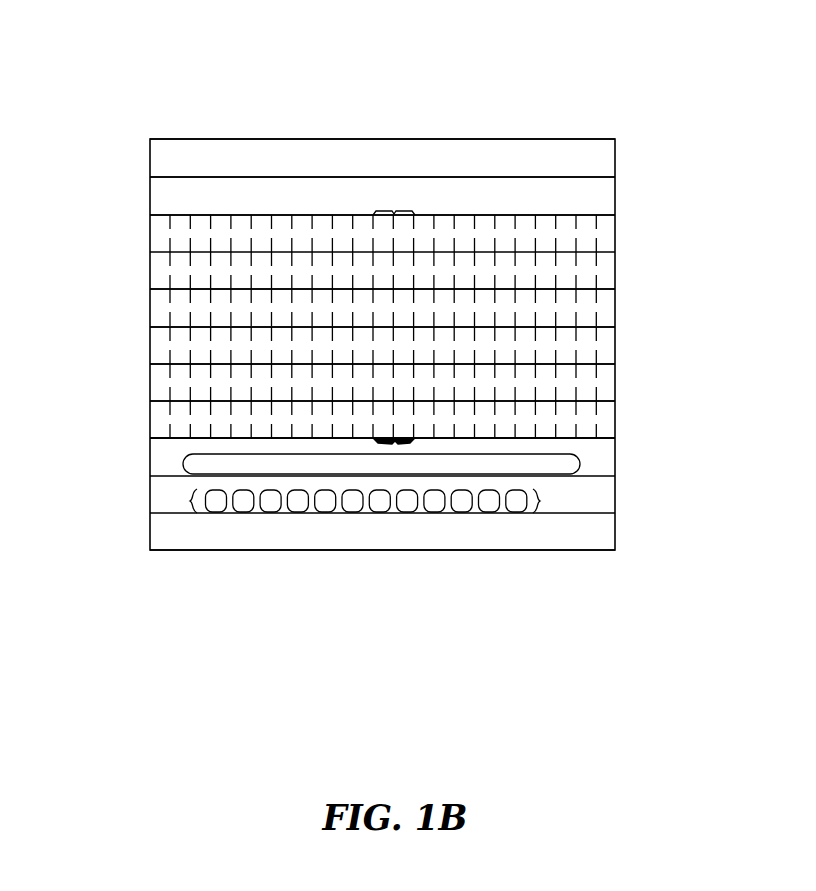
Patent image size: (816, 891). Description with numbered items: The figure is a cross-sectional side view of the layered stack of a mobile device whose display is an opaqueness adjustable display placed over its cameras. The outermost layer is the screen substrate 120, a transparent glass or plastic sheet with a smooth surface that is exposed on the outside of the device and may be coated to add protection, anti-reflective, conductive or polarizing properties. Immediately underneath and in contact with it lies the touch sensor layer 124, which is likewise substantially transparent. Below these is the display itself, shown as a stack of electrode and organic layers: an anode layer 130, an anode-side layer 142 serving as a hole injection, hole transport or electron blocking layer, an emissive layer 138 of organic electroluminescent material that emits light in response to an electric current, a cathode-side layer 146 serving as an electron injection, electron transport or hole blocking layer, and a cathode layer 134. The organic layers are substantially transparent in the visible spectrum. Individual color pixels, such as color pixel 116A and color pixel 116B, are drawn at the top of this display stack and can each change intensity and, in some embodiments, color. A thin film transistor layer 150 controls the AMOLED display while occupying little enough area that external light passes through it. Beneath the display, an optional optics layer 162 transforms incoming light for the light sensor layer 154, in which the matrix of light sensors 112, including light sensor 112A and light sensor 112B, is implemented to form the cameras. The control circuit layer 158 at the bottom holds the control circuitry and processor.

The screen substrate 120 is at (580, 155).
The touch sensor layer 124 is at (613, 193).
The color pixel 116A is at (383, 207).
The color pixel 116B is at (403, 207).
The anode layer 130 is at (158, 238).
The anode-side layer 142 is at (167, 268).
The emissive layer 138 is at (612, 312).
The cathode-side layer 146 is at (175, 348).
The cathode layer 134 is at (607, 387).
The thin film transistor layer 150 is at (162, 425).
The optics layer 162 is at (607, 460).
The light sensor layer 154 is at (607, 498).
The control circuit layer 158 is at (602, 543).
The light sensors 112 is at (192, 497).
The light sensor 112A is at (271, 500).
The light sensor 112B is at (325, 500).